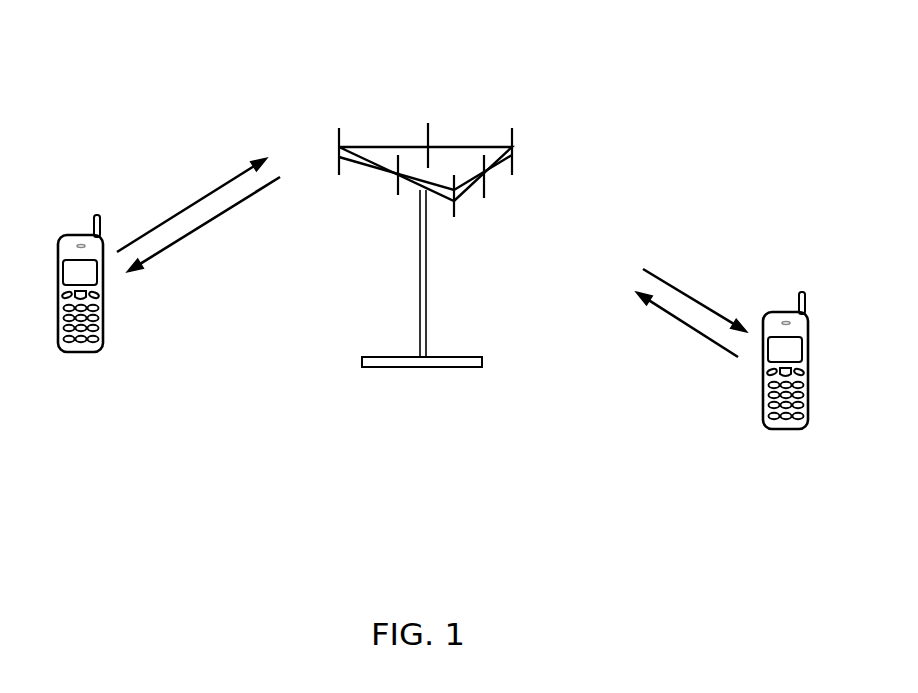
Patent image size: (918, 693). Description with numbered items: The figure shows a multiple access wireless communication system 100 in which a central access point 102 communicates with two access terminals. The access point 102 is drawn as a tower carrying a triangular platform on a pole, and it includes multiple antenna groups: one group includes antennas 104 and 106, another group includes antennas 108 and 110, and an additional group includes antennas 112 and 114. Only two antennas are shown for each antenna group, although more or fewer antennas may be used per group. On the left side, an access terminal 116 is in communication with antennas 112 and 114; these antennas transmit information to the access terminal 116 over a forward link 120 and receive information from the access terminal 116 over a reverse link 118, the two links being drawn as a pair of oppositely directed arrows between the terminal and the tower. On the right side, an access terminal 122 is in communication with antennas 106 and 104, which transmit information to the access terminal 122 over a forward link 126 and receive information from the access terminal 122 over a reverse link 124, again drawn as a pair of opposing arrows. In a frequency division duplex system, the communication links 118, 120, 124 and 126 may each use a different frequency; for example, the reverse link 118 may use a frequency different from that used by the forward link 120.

The multiple access wireless communication system 100 is at (779, 46).
The access point 102 is at (436, 367).
The antenna 104 is at (457, 215).
The antenna 106 is at (485, 190).
The antenna 108 is at (514, 167).
The antenna 110 is at (429, 132).
The antenna 112 is at (338, 137).
The antenna 114 is at (395, 195).
The access terminal 116 is at (79, 354).
The reverse link 118 is at (198, 200).
The forward link 120 is at (196, 230).
The access terminal 122 is at (788, 429).
The reverse link 124 is at (687, 328).
The forward link 126 is at (682, 292).